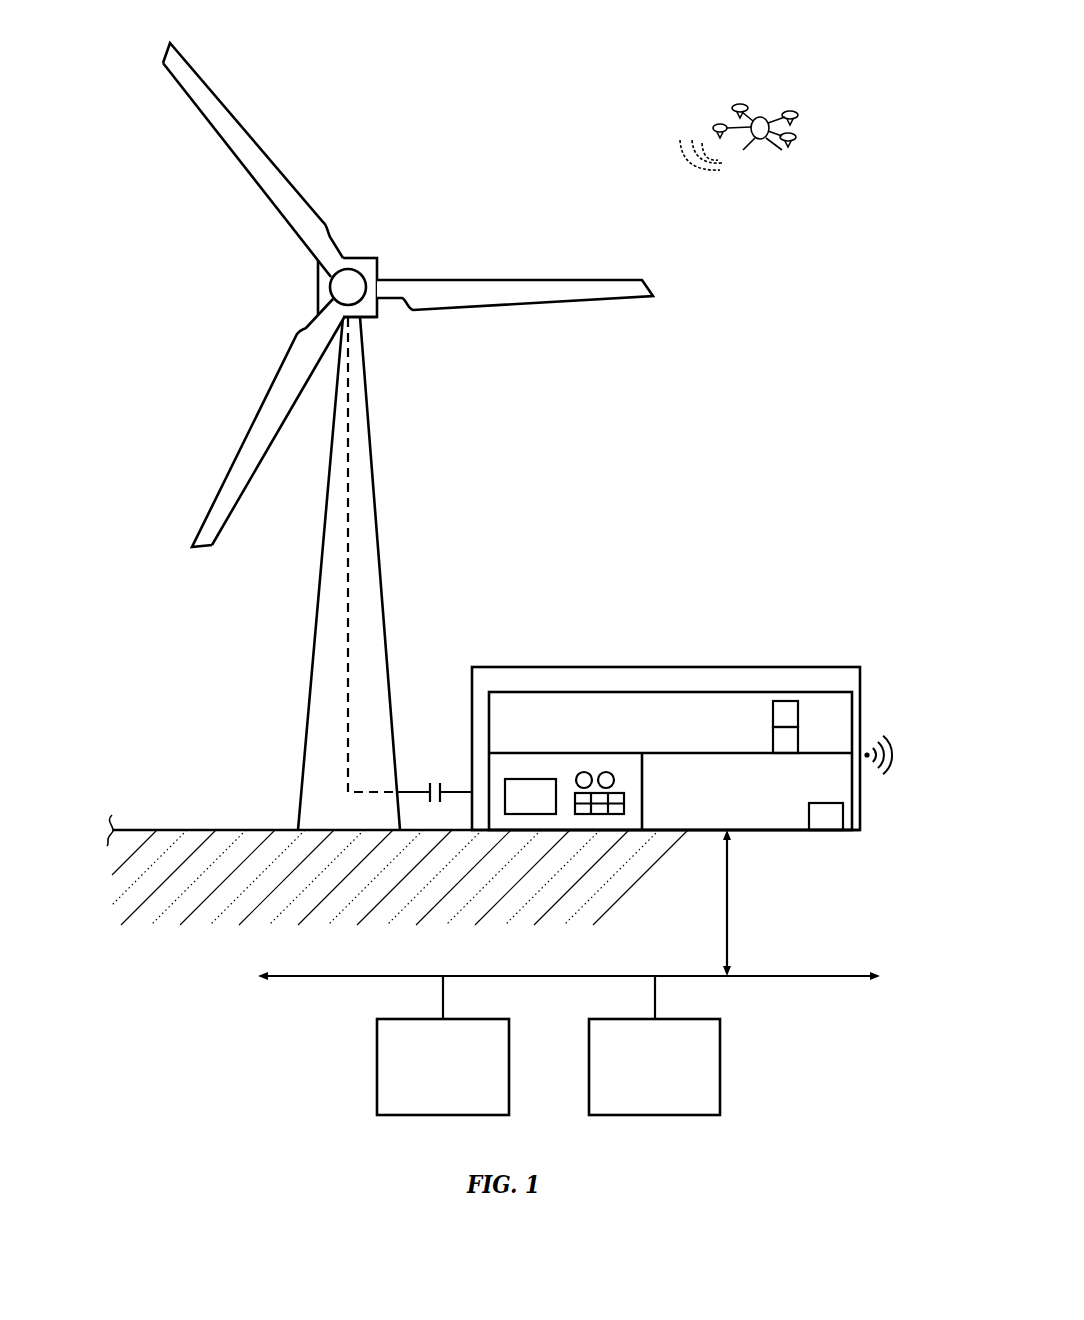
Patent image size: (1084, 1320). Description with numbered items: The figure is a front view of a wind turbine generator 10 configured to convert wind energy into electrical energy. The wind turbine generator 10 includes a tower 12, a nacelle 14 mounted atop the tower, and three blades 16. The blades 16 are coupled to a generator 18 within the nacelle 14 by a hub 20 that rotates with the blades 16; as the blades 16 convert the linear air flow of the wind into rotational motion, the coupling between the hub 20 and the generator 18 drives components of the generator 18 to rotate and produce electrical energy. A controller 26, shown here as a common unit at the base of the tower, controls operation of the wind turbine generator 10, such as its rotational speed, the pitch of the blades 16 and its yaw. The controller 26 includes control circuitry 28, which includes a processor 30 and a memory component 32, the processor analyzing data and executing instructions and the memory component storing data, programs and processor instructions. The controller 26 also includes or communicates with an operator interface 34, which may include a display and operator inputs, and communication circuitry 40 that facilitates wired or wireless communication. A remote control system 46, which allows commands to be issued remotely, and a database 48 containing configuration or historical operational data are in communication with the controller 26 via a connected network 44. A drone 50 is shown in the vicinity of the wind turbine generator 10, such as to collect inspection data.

The wind turbine generator 10 is at (437, 190).
The tower 12 is at (375, 524).
The nacelle 14 is at (360, 272).
The blades 16 is at (268, 153).
The generator 18 is at (374, 258).
The hub 20 is at (364, 319).
The controller 26 is at (667, 668).
The control circuitry 28 is at (670, 692).
The processor 30 is at (799, 712).
The memory component 32 is at (799, 737).
The operator interface 34 is at (532, 778).
The communication circuitry 40 is at (755, 822).
The network 44 is at (792, 975).
The remote control system 46 is at (510, 1064).
The database 48 is at (720, 1064).
The drone 50 is at (762, 117).